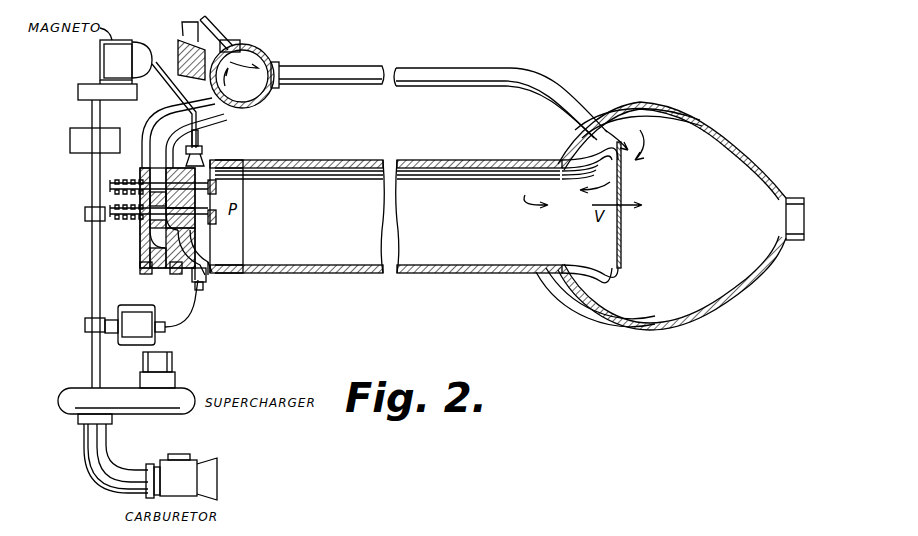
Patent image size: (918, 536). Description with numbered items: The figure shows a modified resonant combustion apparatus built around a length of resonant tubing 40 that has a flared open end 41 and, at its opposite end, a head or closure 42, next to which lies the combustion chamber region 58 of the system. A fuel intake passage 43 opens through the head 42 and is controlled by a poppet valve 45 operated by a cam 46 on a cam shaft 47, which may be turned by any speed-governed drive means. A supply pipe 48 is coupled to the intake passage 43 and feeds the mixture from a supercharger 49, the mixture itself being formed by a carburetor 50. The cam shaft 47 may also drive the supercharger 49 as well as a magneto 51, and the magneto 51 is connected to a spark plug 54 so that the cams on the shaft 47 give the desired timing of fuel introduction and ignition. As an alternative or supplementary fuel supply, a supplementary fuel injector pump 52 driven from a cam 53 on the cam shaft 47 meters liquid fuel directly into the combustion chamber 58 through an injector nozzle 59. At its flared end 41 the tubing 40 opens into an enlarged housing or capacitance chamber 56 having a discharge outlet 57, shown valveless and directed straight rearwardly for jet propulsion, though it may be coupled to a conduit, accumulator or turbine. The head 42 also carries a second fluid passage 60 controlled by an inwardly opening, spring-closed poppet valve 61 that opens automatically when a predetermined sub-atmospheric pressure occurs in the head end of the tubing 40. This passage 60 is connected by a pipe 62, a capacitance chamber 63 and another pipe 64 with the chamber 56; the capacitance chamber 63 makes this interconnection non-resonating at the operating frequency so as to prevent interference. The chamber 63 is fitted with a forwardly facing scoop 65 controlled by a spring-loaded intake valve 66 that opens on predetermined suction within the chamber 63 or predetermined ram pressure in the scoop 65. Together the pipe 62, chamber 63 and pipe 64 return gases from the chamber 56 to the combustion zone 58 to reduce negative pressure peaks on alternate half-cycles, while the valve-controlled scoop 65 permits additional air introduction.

The resonant tubing 40 is at (430, 162).
The flared open end 41 is at (623, 262).
The head or closure 42 is at (202, 248).
The fuel intake passage 43 is at (145, 250).
The poppet valve 45 is at (216, 220).
The cam 46 is at (85, 214).
The cam shaft 47 is at (92, 270).
The supply pipe 48 is at (175, 372).
The supercharger 49 is at (150, 400).
The carburetor 50 is at (186, 475).
The magneto 51 is at (112, 60).
The supplementary fuel injector pump 52 is at (138, 326).
The cam 53 is at (85, 326).
The spark plug 54 is at (204, 156).
The capacitance chamber 56 is at (722, 312).
The discharge outlet 57 is at (790, 242).
The combustion chamber region 58 is at (222, 203).
The injector nozzle 59 is at (204, 285).
The second fluid passage 60 is at (148, 176).
The spring-closed poppet valve 61 is at (216, 187).
The pipe 62 is at (162, 122).
The capacitance chamber 63 is at (262, 52).
The pipe 64 is at (350, 68).
The scoop 65 is at (185, 42).
The intake valve 66 is at (228, 46).